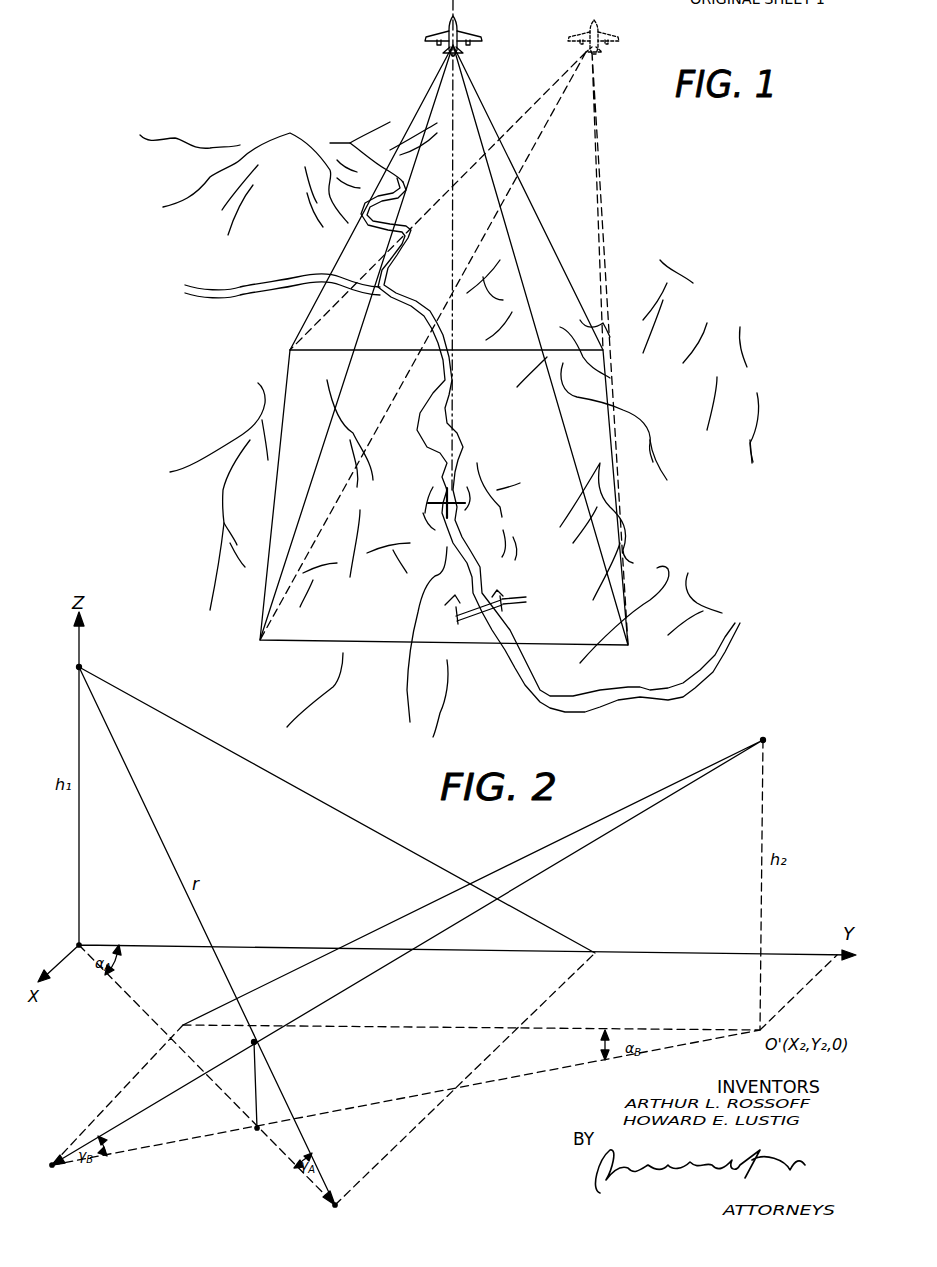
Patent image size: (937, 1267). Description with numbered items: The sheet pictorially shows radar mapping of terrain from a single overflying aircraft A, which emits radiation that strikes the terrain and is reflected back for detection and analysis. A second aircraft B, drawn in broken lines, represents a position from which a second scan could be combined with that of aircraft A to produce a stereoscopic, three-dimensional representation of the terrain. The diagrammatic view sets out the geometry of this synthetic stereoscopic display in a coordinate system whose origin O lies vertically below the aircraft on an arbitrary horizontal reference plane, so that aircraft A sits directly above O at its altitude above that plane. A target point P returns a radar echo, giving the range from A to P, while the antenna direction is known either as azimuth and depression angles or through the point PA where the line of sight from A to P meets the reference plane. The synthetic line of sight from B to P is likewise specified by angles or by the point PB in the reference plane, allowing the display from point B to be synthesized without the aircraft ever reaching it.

In FIG. 1, the aircraft A is at (430, 23).
In FIG. 2, the aircraft A is at (336, 925).
In FIG. 1, the second aircraft B is at (610, 26).
In FIG. 2, the second aircraft B is at (455, 949).
In FIG. 2, the origin O is at (87, 933).
In FIG. 2, the target point P is at (302, 1082).
In FIG. 2, the intersection point PA is at (381, 1205).
In FIG. 2, the intersection point PB is at (78, 1178).